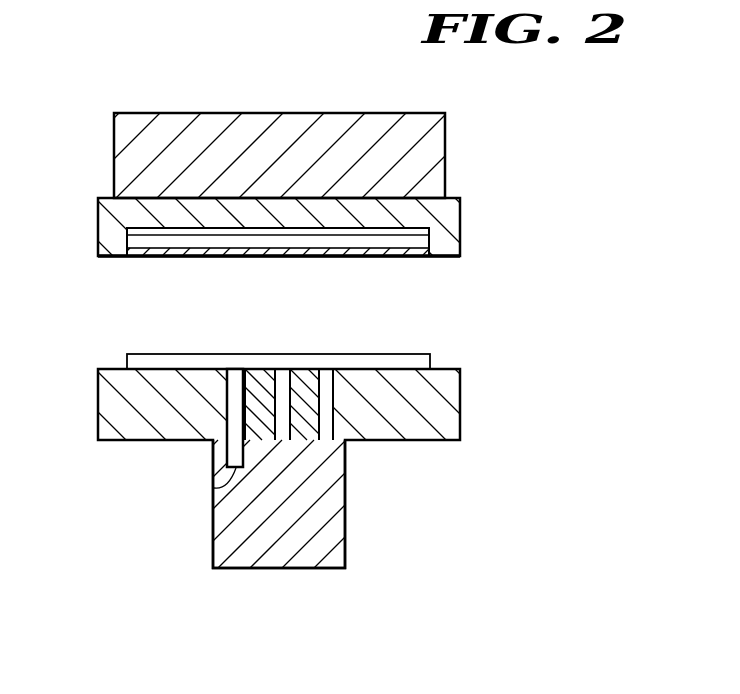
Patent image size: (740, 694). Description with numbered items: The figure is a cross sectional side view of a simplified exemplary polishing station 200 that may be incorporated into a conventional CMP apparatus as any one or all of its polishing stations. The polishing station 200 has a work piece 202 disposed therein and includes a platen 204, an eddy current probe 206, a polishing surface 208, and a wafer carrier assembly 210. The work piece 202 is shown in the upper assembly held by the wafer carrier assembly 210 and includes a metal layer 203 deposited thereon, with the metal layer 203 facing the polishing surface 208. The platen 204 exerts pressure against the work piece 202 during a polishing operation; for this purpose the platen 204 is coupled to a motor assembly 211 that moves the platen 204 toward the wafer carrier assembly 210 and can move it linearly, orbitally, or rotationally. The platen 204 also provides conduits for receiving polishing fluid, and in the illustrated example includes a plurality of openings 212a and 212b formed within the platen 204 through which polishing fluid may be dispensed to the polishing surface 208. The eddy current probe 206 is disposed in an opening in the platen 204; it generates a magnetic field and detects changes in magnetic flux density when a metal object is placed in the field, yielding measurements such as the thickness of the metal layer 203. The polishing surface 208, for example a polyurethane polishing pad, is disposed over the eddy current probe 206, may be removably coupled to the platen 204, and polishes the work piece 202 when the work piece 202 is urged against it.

The polishing station 200 is at (303, 56).
The wafer carrier assembly 210 is at (445, 139).
The metal layer 203 is at (275, 257).
The work piece 202 is at (362, 242).
The platen 204 is at (460, 389).
The motor assembly 211 is at (345, 519).
The opening 212a is at (227, 422).
The opening 212b is at (283, 377).
The eddy current probe 206 is at (214, 488).
The polishing surface 208 is at (189, 354).